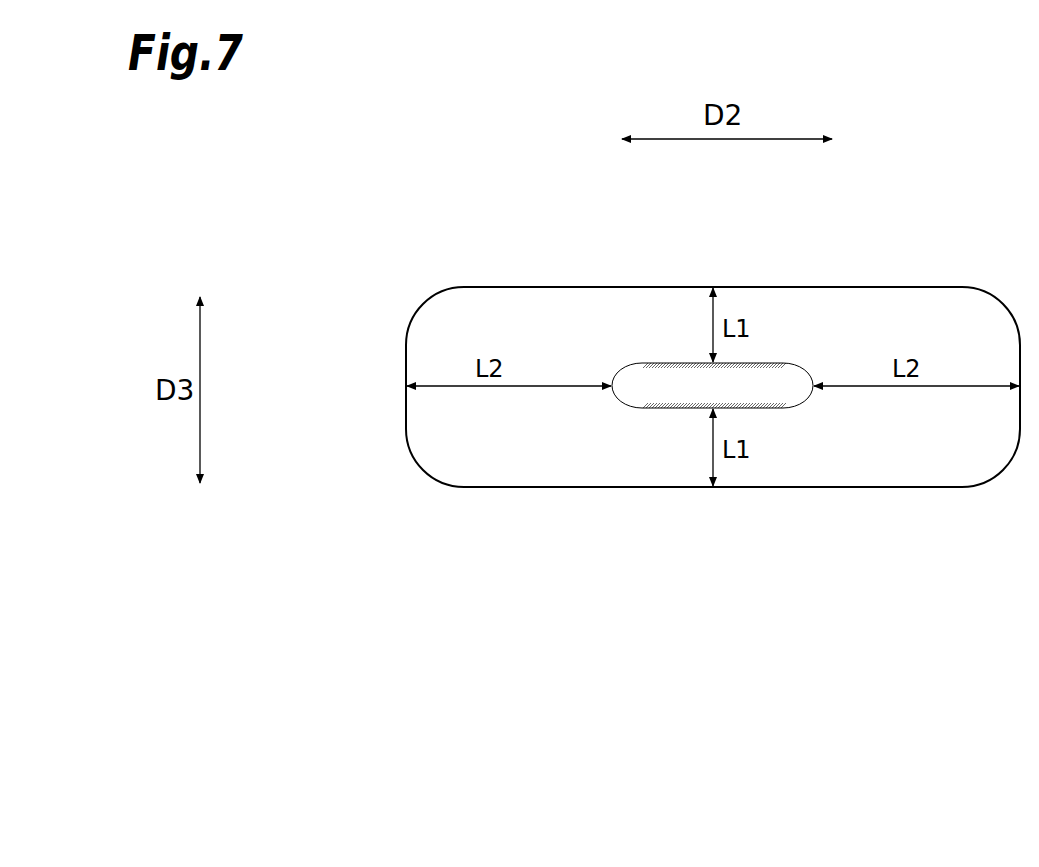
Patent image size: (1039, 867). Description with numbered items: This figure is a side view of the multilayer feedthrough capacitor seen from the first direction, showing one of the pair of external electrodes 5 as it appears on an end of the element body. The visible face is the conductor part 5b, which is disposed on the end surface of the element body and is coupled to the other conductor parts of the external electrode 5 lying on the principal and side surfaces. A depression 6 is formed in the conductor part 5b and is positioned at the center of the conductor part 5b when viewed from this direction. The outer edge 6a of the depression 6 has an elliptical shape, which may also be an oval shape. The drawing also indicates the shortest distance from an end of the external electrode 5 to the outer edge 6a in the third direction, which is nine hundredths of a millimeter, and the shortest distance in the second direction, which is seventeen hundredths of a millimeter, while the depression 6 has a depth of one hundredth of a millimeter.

The external electrode 5 is at (977, 487).
The conductor part 5b is at (882, 457).
The depression 6 is at (667, 392).
The outer edge 6a is at (623, 405).